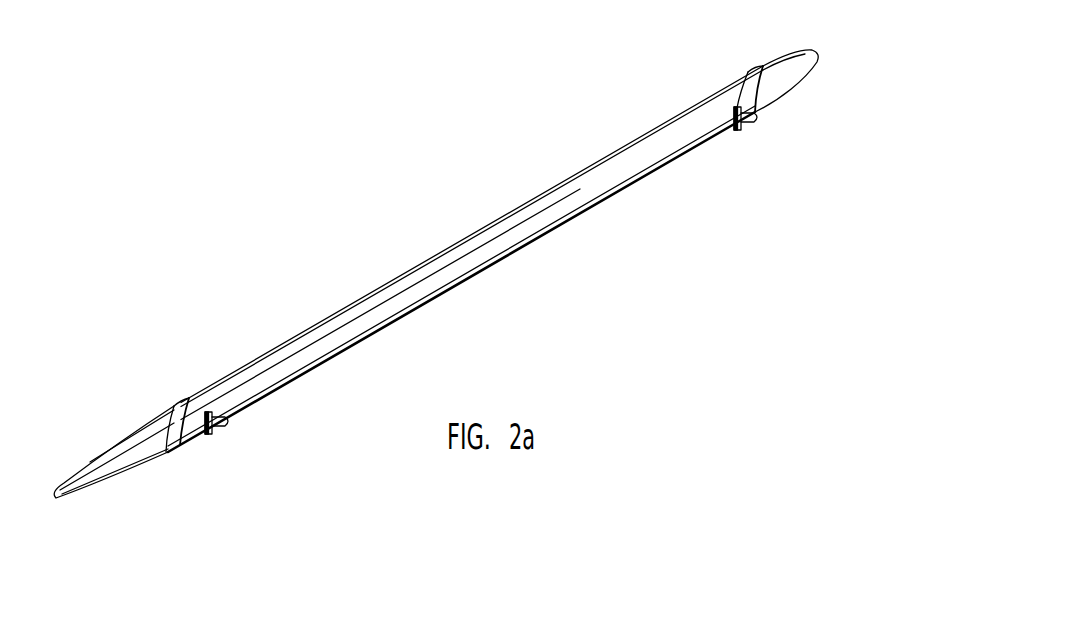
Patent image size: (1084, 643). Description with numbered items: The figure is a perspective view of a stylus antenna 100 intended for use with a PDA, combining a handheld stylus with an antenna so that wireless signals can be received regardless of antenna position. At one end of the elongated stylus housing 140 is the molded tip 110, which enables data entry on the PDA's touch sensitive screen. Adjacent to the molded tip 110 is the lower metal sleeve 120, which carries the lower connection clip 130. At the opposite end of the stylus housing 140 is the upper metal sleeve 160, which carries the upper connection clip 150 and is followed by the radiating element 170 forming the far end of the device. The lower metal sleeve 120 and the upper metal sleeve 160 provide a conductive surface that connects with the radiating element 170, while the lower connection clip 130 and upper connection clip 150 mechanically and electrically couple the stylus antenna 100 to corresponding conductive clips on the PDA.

The stylus antenna 100 is at (407, 186).
The molded tip 110 is at (116, 462).
The lower metal sleeve 120 is at (187, 430).
The lower connection clip 130 is at (227, 424).
The stylus housing 140 is at (480, 247).
The upper connection clip 150 is at (738, 120).
The upper metal sleeve 160 is at (757, 100).
The radiating element 170 is at (782, 73).